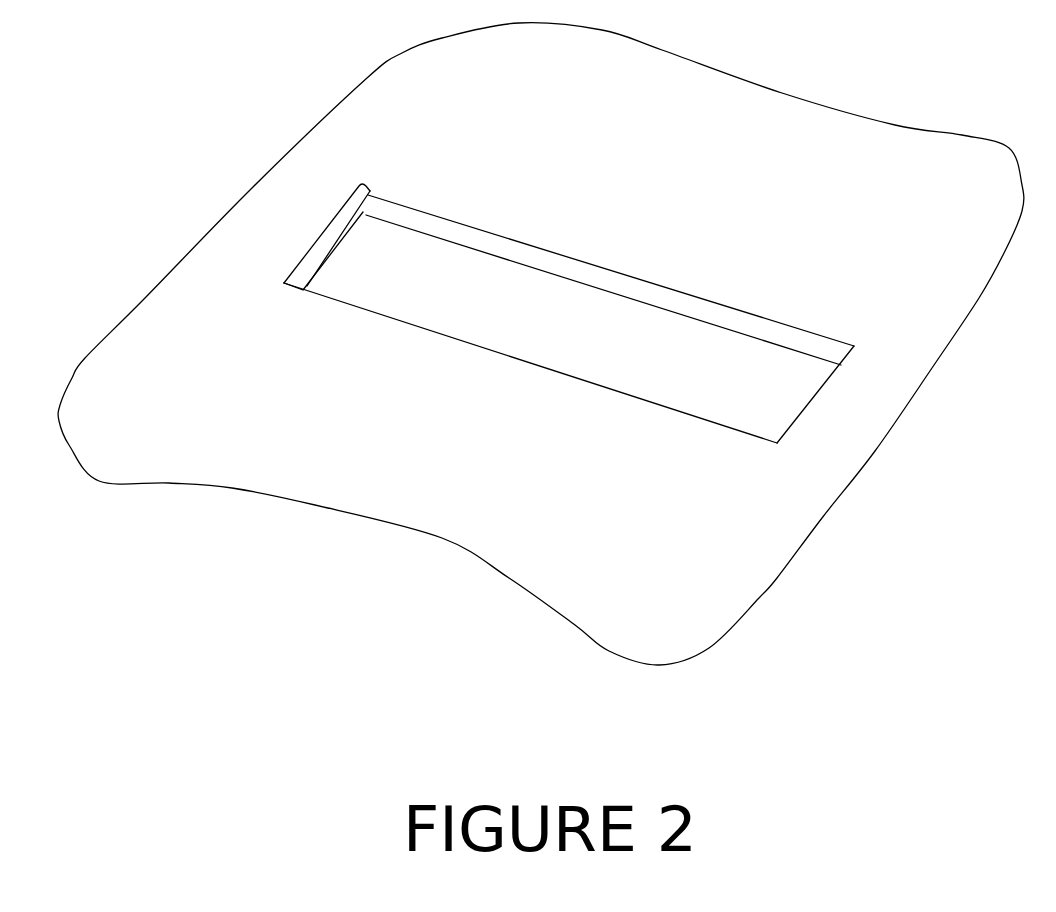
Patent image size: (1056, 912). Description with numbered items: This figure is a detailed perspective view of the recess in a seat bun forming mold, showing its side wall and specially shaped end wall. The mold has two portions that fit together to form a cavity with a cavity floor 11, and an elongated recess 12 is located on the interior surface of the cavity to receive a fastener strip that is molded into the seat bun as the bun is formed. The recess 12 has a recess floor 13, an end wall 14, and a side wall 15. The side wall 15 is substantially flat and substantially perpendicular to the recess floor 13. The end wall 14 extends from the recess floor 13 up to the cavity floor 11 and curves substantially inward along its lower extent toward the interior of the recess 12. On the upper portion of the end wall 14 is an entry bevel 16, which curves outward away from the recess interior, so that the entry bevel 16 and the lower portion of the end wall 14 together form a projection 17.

The cavity floor 11 is at (353, 475).
The elongated recess 12 is at (823, 410).
The recess floor 13 is at (677, 375).
The end wall 14 is at (310, 223).
The side wall 15 is at (605, 277).
The entry bevel 16 is at (300, 267).
The projection 17 is at (368, 193).